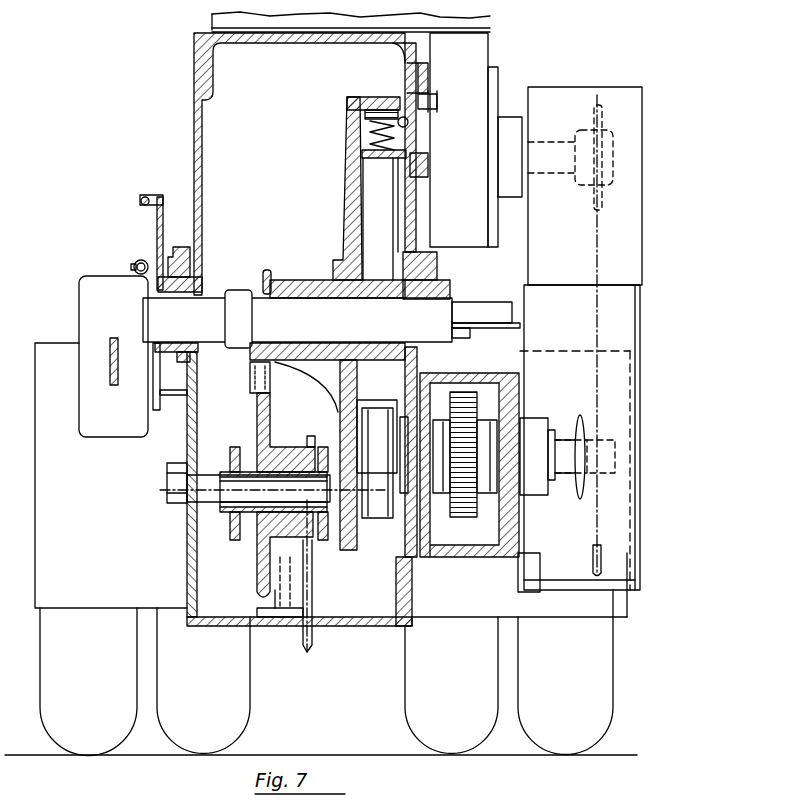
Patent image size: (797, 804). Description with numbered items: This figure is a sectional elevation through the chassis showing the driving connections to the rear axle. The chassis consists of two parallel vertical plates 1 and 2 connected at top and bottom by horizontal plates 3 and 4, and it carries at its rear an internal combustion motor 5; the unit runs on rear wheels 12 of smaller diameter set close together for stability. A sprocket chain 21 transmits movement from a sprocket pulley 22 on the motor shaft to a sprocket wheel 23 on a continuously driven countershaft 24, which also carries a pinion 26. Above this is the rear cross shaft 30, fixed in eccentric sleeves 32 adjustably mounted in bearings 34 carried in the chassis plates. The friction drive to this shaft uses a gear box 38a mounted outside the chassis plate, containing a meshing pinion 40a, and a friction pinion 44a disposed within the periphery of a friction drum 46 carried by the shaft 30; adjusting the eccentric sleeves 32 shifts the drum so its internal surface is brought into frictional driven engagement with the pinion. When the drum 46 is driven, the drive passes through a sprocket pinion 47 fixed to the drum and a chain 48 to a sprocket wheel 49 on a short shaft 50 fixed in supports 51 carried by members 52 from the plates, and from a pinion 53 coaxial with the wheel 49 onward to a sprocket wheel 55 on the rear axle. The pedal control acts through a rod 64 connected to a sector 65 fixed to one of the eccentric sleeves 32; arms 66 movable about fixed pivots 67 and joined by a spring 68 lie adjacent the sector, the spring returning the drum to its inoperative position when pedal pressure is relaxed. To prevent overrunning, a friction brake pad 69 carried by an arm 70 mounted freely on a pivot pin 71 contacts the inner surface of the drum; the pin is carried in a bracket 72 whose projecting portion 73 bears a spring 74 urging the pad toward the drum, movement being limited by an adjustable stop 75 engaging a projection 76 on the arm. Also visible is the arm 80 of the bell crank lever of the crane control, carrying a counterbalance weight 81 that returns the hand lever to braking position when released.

The vertical plate 1 is at (410, 596).
The vertical plate 2 is at (190, 560).
The horizontal plate 3 is at (302, 46).
The horizontal plate 4 is at (352, 628).
The internal combustion motor 5 is at (470, 60).
The rear wheels 12 is at (405, 690).
The sprocket chain 21 is at (600, 242).
The sprocket pulley 22 is at (613, 140).
The sprocket wheel 23 is at (600, 378).
The countershaft 24 is at (616, 465).
The pinion 26 is at (575, 486).
The cross shaft 30 is at (300, 320).
The eccentric sleeve 32 is at (204, 280).
The bearing 34 is at (188, 262).
The gear box 38a is at (466, 550).
The pinion 40a is at (466, 422).
The friction pinion 44a is at (373, 420).
The friction drum 46 is at (365, 560).
The sprocket pinion 47 is at (268, 270).
The chain 48 is at (250, 376).
The sprocket wheel 49 is at (257, 410).
The short shaft 50 is at (252, 518).
The supports 51 is at (232, 535).
The members 52 is at (233, 452).
The pinion 53 is at (311, 436).
The sprocket wheel 55 is at (303, 640).
The rod 64 is at (145, 197).
The sector 65 is at (157, 225).
The arms 66 is at (158, 372).
The fixed pivots 67 is at (175, 398).
The spring 68 is at (132, 264).
The friction brake pad 69 is at (377, 97).
The arm 70 is at (364, 117).
The pivot pin 71 is at (409, 122).
The bracket 72 is at (428, 165).
The projecting portion 73 is at (352, 160).
The spring 74 is at (384, 152).
The adjustable stop 75 is at (430, 94).
The projection 76 is at (423, 64).
The arm 80 is at (110, 372).
The counterbalance weight 81 is at (107, 437).